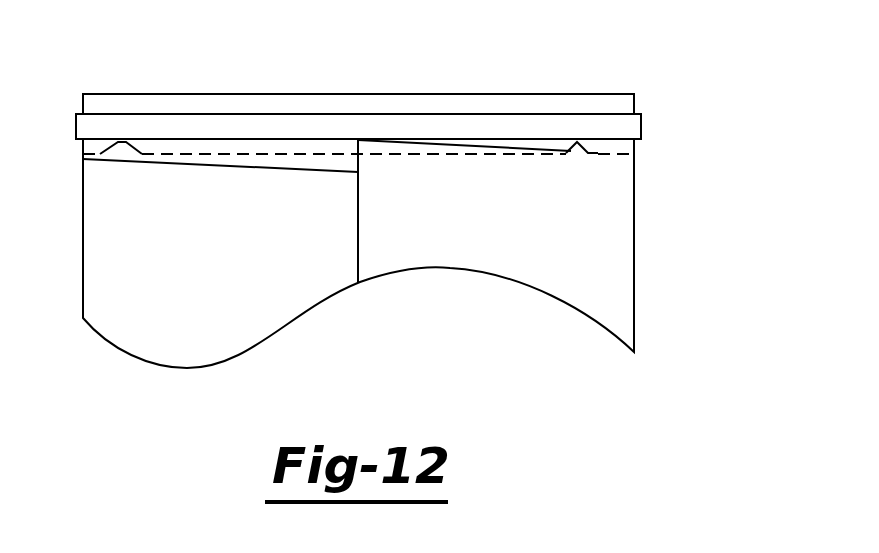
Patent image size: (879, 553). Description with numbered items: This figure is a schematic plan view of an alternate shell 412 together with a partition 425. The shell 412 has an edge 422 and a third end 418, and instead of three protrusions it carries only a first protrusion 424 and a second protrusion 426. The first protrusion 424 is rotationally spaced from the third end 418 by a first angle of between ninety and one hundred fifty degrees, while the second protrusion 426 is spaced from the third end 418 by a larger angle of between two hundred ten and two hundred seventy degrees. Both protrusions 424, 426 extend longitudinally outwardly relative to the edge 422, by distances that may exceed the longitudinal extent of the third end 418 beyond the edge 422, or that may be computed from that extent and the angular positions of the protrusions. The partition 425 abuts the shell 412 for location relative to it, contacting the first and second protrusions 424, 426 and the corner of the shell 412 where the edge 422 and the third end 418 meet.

The shell 412 is at (84, 225).
The third end 418 is at (358, 203).
The edge 422 is at (497, 148).
The first protrusion 424 is at (562, 135).
The partition 425 is at (634, 104).
The second protrusion 426 is at (108, 140).